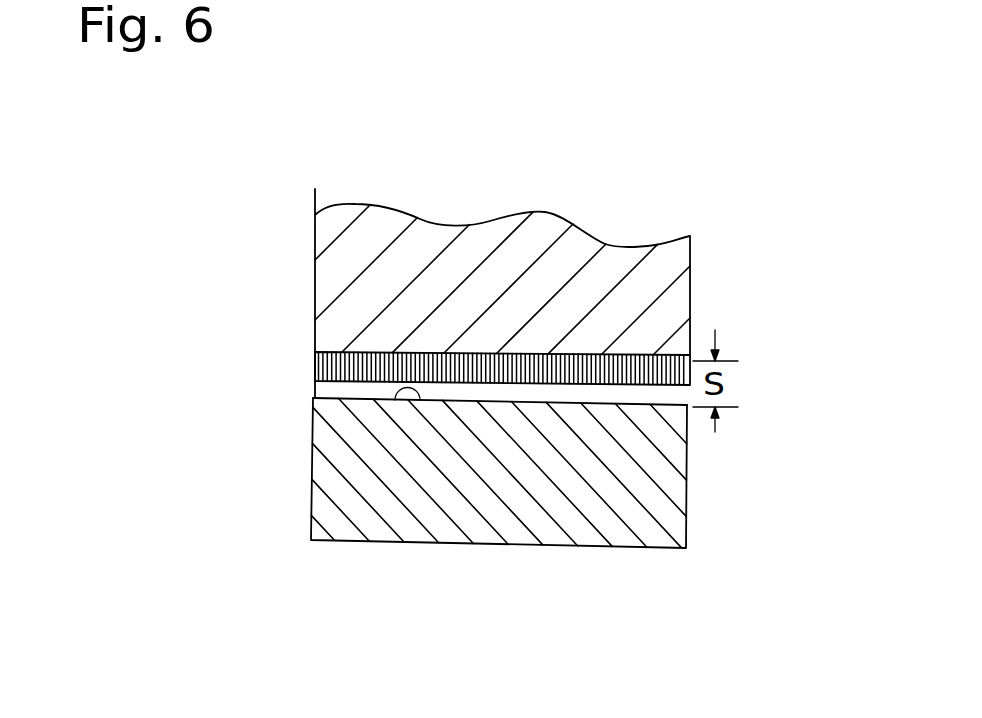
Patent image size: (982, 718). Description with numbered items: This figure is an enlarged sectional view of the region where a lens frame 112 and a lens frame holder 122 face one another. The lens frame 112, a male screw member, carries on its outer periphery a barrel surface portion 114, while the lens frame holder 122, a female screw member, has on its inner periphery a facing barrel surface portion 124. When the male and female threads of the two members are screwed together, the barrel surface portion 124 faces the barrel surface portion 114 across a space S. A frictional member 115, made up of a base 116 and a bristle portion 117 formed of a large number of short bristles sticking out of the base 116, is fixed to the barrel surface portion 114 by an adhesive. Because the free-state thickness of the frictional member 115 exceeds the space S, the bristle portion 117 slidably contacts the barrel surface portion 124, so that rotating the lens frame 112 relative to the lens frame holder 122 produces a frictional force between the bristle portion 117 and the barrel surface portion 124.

The lens frame 112 is at (685, 479).
The barrel surface portion 114 is at (395, 400).
The frictional member 115 is at (177, 335).
The base 116 is at (335, 389).
The bristle portion 117 is at (313, 372).
The lens frame holder 122 is at (668, 260).
The barrel surface portion 124 is at (577, 362).